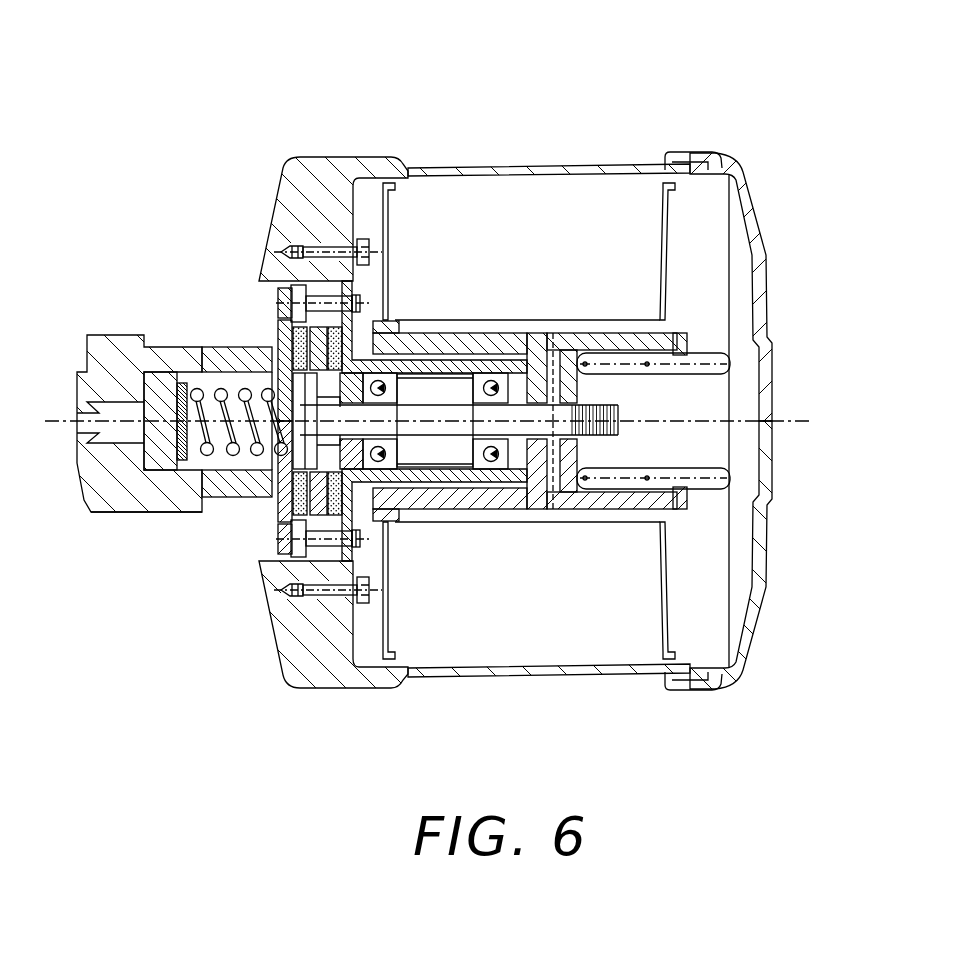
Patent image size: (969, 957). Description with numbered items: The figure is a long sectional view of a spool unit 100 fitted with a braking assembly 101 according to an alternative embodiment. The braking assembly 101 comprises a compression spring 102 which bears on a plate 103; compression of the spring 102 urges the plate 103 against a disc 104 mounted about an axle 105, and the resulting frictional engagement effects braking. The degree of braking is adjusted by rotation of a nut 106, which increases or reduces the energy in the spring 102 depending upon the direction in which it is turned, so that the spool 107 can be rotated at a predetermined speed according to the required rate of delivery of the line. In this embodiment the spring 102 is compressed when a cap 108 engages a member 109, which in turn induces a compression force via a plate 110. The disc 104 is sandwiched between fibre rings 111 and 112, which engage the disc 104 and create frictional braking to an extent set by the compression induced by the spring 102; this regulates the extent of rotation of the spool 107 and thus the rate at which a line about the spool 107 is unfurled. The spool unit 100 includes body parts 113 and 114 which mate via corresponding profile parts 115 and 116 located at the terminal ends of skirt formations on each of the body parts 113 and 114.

The spool unit 100 is at (190, 126).
The braking assembly 101 is at (118, 548).
The compression spring 102 is at (222, 490).
The plate 103 is at (277, 300).
The disc 104 is at (280, 340).
The axle 105 is at (613, 415).
The nut 106 is at (98, 510).
The spool 107 is at (403, 640).
The cap 108 is at (77, 377).
The member 109 is at (200, 355).
The plate 110 is at (278, 548).
The fibre ring 111 is at (292, 497).
The fibre ring 112 is at (345, 497).
The body part 113 is at (505, 168).
The body part 114 is at (750, 185).
The profile part 115 is at (678, 190).
The profile part 116 is at (706, 158).